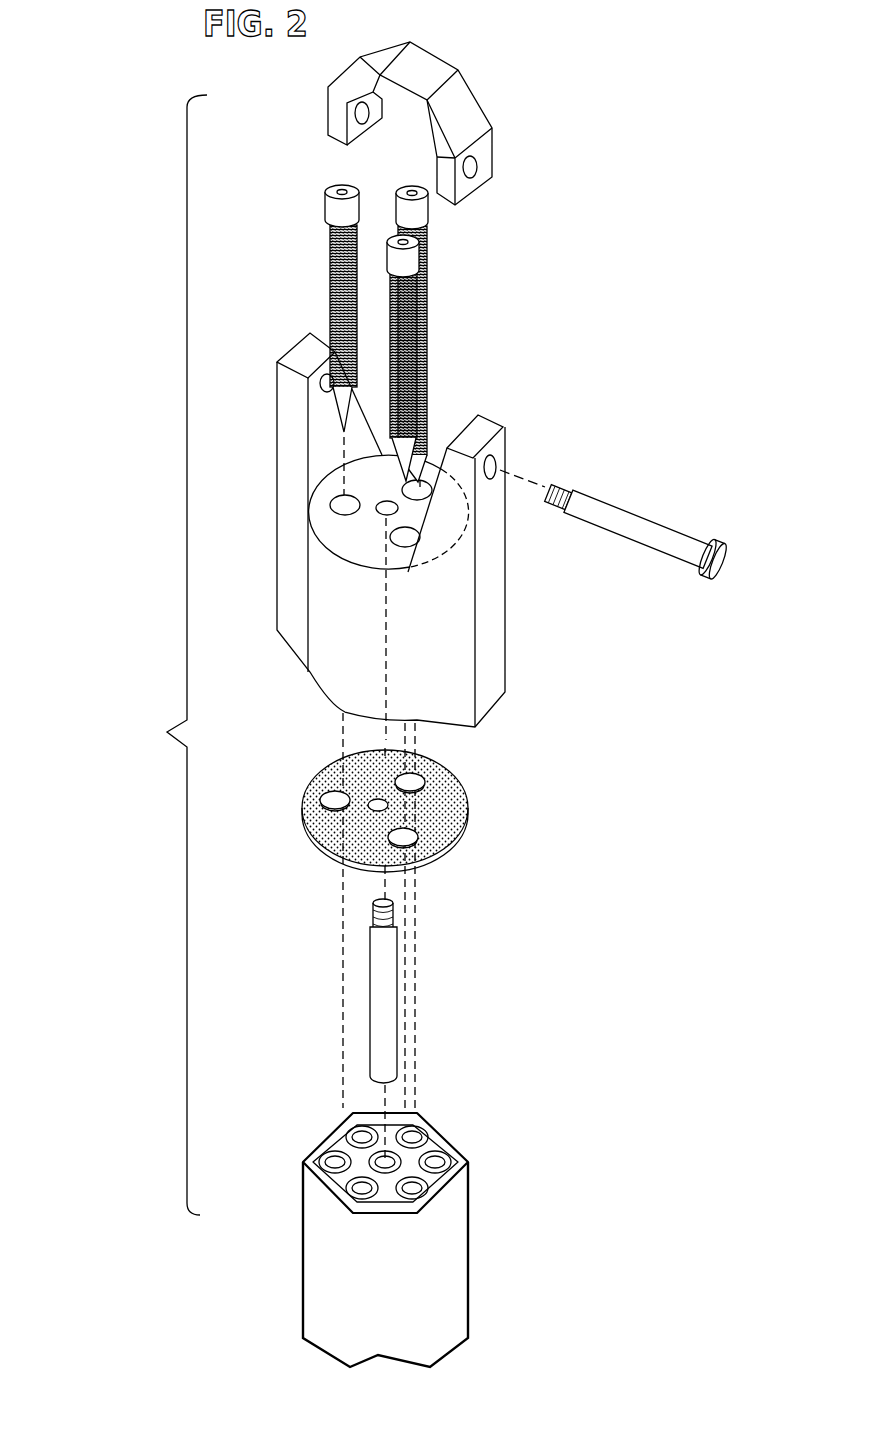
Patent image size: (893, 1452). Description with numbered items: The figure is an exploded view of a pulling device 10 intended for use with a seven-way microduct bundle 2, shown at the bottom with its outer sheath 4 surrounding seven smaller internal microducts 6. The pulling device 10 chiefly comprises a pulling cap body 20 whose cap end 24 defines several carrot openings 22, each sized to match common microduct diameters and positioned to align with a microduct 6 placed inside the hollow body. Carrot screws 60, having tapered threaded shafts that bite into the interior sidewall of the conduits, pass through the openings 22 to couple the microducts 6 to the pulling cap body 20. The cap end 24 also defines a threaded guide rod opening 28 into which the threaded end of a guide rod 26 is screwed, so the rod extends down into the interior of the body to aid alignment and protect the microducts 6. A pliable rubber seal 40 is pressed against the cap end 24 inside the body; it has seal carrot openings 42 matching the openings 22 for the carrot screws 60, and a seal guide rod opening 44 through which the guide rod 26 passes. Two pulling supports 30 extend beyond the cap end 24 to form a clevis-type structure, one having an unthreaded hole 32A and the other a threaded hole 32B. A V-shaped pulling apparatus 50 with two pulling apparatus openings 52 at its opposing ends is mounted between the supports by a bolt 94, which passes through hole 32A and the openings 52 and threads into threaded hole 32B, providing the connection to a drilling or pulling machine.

The microduct bundle 2 is at (395, 1227).
The outer sheath 4 is at (302, 1330).
The microducts 6 is at (322, 1158).
The pulling device 10 is at (128, 115).
The pulling cap body 20 is at (448, 677).
The carrot opening 22 is at (335, 510).
The cap end 24 is at (333, 533).
The guide rod 26 is at (385, 1003).
The threaded guide rod opening 28 is at (400, 505).
The pulling supports 30 is at (283, 400).
The hole 32A is at (495, 463).
The threaded hole 32B is at (323, 377).
The rubber seal 40 is at (467, 833).
The seal carrot openings 42 is at (332, 797).
The seal guide rod opening 44 is at (370, 802).
The pulling apparatus 50 is at (430, 63).
The pulling apparatus openings 52 is at (360, 117).
The carrot screw 60 is at (327, 222).
The bolt 94 is at (645, 528).